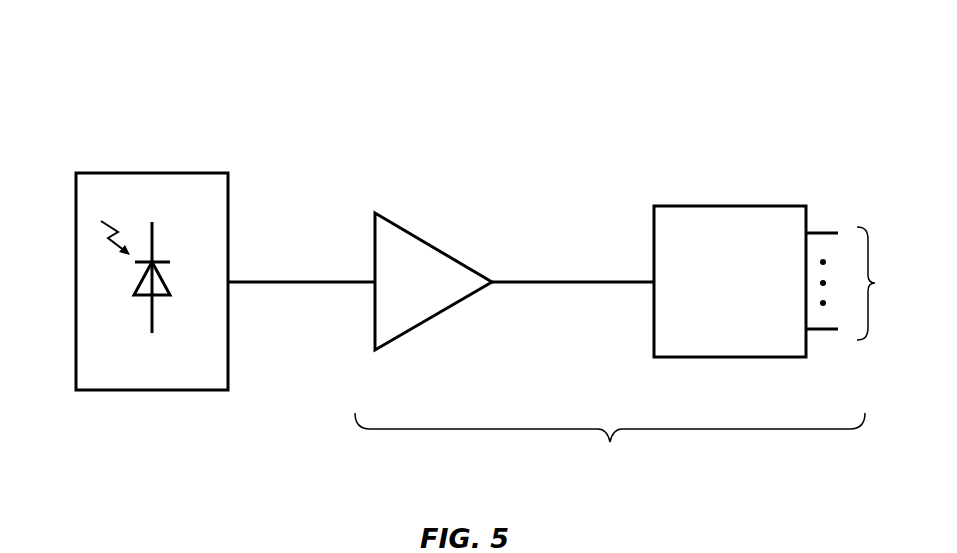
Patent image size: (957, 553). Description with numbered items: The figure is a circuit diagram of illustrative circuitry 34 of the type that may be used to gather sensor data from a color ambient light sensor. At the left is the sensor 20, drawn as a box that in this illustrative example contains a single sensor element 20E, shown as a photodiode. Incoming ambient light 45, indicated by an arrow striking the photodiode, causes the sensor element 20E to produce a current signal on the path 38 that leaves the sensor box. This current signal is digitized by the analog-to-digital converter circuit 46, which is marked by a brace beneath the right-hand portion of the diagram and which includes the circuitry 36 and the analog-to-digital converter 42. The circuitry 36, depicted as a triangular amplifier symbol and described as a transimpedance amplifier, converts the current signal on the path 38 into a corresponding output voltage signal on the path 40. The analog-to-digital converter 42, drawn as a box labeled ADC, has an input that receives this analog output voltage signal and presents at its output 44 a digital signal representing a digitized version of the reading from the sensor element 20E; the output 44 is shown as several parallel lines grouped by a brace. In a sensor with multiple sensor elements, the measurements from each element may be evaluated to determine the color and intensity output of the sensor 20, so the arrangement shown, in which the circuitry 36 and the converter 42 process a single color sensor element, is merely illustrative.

The detection circuit 34 is at (630, 80).
The sensor 20 is at (155, 392).
The sensor element 20E is at (140, 297).
The ambient light 45 is at (105, 243).
The path 38 is at (313, 287).
The circuitry 36 is at (428, 323).
The path 40 is at (566, 287).
The analog-to-digital converter 42 is at (729, 360).
The output 44 is at (853, 283).
The analog-to-digital converter circuit 46 is at (610, 439).